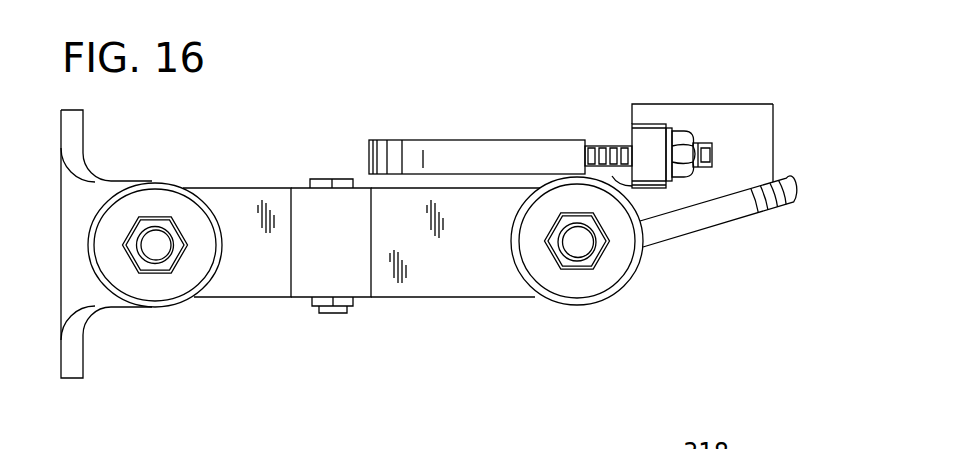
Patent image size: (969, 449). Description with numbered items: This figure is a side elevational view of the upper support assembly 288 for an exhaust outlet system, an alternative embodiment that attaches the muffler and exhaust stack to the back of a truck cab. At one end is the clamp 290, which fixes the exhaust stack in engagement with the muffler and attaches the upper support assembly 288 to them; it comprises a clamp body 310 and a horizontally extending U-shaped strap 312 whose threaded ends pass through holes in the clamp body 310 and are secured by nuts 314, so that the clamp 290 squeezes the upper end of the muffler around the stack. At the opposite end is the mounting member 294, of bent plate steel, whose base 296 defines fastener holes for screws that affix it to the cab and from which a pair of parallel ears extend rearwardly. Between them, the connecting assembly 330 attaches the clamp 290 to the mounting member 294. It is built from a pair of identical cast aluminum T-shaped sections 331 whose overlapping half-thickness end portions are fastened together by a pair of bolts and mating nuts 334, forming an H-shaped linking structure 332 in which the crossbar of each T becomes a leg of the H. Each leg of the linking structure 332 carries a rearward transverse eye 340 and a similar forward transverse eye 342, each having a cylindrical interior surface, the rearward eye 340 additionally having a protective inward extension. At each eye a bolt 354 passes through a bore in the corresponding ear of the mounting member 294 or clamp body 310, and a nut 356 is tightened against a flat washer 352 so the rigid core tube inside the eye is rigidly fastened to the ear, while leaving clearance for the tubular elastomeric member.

The upper support assembly 288 is at (338, 87).
The clamp 290 is at (788, 111).
The mounting member 294 is at (102, 172).
The base 296 is at (100, 336).
The clamp body 310 is at (752, 137).
The U-shaped strap 312 is at (432, 140).
The nuts 314 is at (685, 138).
The connecting assembly 330 is at (723, 252).
The T-shaped sections 331 is at (473, 290).
The H-shaped linking structure 332 is at (360, 330).
The bolts and mating nuts 334 is at (320, 179).
The rearward transverse eye 340 is at (513, 222).
The forward transverse eye 342 is at (225, 235).
The flat washer 352 is at (192, 215).
The bolt 354 is at (152, 250).
The nut 356 is at (183, 257).